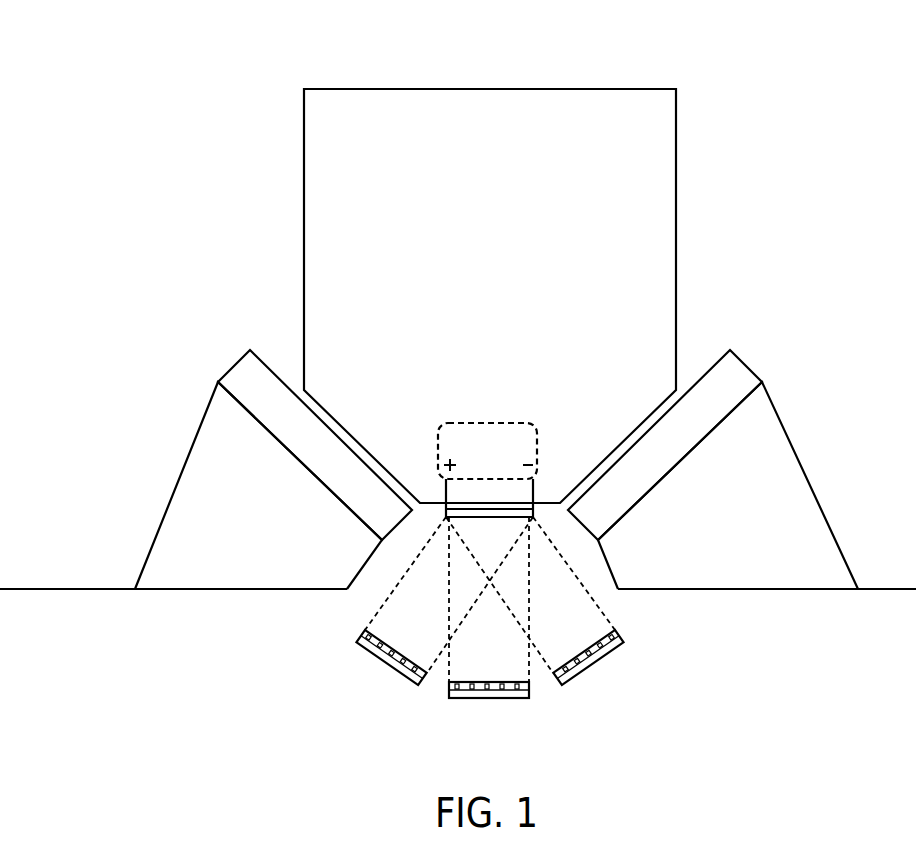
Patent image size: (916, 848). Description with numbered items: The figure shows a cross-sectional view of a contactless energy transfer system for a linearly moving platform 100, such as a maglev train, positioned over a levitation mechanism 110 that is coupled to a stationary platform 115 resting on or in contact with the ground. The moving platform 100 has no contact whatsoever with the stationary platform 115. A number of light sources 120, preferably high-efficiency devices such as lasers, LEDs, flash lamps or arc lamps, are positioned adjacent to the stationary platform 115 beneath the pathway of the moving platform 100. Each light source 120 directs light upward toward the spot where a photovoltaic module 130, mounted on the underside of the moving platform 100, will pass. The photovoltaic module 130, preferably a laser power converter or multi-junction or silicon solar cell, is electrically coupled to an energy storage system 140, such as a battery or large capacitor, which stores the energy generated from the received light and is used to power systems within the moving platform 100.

The moving platform 100 is at (490, 88).
The levitation mechanism 110 is at (628, 445).
The stationary platform 115 is at (227, 547).
The light sources 120 is at (395, 673).
The photovoltaic module 130 is at (445, 515).
The energy storage system 140 is at (535, 468).